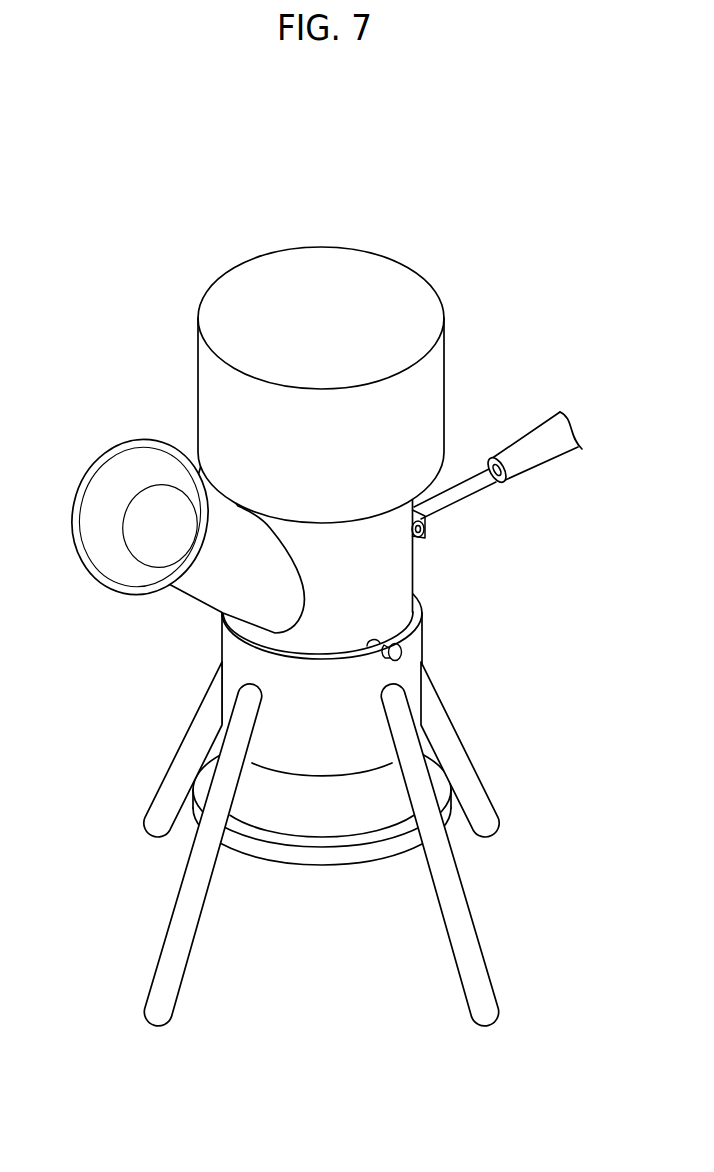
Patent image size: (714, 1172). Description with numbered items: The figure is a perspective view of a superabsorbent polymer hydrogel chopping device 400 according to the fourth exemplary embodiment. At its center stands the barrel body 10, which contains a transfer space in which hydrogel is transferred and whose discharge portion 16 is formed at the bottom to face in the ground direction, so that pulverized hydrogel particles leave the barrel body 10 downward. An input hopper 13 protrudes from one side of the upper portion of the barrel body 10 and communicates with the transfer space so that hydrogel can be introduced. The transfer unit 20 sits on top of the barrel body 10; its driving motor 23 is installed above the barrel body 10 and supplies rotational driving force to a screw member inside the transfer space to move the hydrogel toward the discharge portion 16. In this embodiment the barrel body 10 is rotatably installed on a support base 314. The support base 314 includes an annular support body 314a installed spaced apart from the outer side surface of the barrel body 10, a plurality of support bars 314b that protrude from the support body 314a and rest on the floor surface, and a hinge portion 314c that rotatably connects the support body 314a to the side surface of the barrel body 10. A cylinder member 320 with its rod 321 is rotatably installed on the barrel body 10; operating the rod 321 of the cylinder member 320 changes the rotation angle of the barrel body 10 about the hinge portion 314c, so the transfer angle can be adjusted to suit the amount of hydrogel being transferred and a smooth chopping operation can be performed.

The superabsorbent polymer hydrogel chopping device 400 is at (480, 215).
The transfer unit 20 is at (263, 354).
The driving motor 23 is at (318, 253).
The barrel body 10 is at (398, 562).
The input hopper 13 is at (189, 587).
The discharge portion 16 is at (348, 860).
The support base 314 is at (314, 810).
The support body 314a is at (297, 757).
The support bars 314b is at (158, 796).
The hinge portion 314c is at (404, 652).
The cylinder member 320 is at (520, 443).
The rod 321 is at (473, 487).